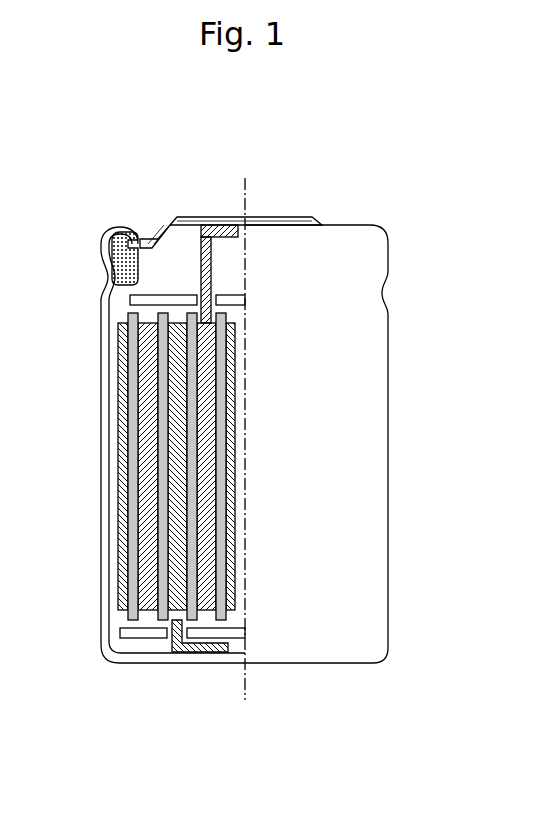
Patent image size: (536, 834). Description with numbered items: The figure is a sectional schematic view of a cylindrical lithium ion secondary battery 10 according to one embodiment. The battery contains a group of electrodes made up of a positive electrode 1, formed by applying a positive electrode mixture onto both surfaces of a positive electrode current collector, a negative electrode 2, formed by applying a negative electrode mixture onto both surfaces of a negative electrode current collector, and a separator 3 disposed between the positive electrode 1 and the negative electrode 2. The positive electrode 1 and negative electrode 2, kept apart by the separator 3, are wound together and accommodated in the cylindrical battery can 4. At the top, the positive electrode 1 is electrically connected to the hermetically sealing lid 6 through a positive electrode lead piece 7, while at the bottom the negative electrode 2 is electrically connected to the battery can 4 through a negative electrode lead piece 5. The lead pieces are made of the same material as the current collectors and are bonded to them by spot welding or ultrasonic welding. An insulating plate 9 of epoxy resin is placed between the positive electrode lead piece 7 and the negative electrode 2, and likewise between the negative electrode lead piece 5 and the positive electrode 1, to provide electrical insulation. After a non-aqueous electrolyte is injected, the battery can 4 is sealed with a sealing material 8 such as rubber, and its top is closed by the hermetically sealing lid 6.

The positive electrode 1 is at (146, 522).
The negative electrode 2 is at (118, 528).
The separator 3 is at (128, 612).
The battery can 4 is at (101, 435).
The negative electrode lead piece 5 is at (172, 647).
The hermetically sealing lid 6 is at (283, 216).
The positive electrode lead piece 7 is at (200, 230).
The sealing material 8 is at (112, 251).
The insulating plate 9 is at (130, 299).
The lithium ion secondary battery 10 is at (245, 446).